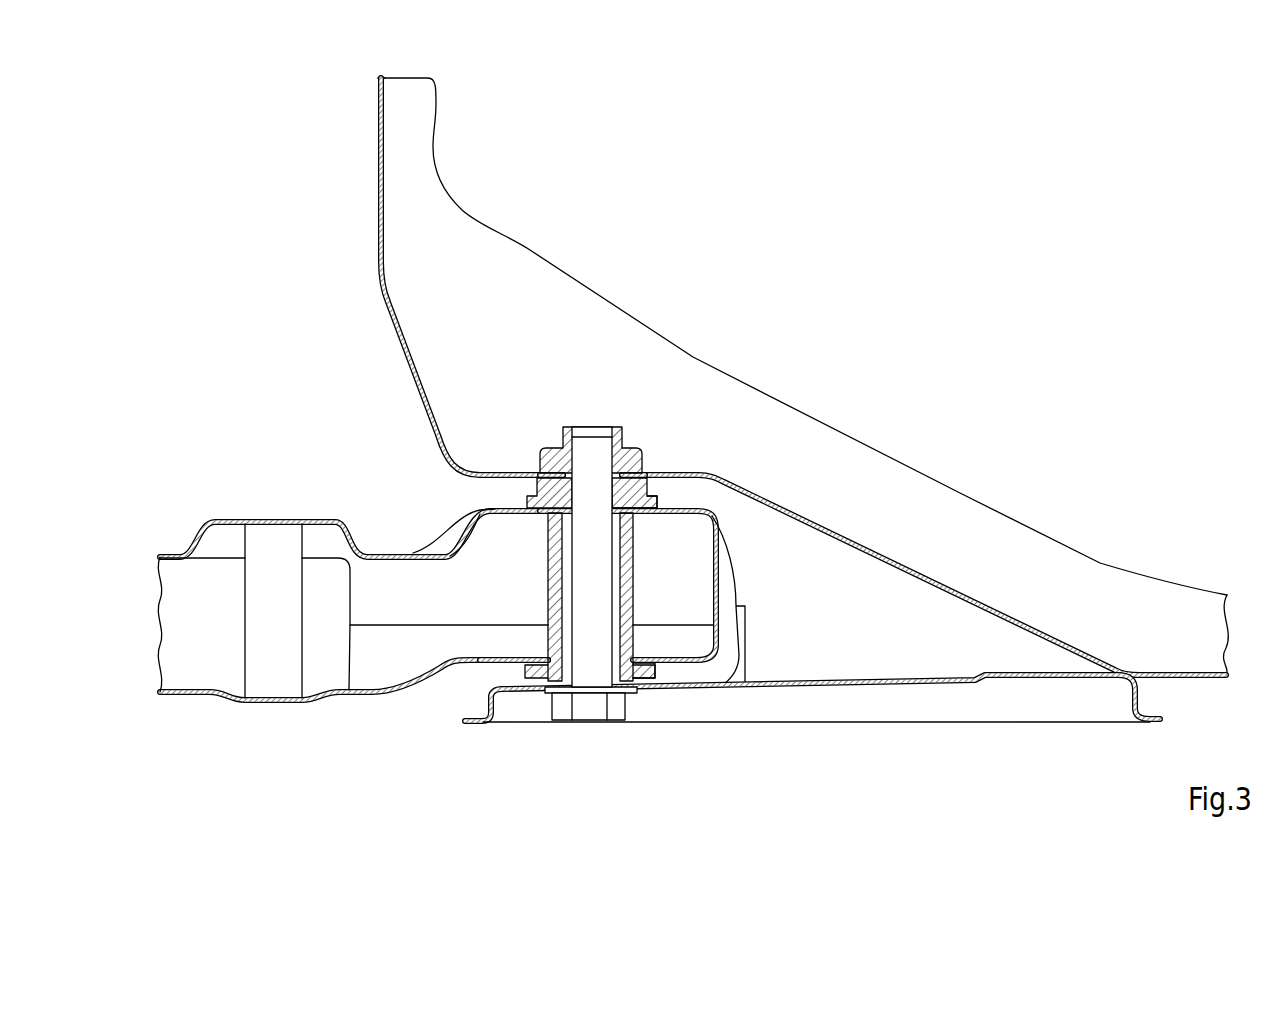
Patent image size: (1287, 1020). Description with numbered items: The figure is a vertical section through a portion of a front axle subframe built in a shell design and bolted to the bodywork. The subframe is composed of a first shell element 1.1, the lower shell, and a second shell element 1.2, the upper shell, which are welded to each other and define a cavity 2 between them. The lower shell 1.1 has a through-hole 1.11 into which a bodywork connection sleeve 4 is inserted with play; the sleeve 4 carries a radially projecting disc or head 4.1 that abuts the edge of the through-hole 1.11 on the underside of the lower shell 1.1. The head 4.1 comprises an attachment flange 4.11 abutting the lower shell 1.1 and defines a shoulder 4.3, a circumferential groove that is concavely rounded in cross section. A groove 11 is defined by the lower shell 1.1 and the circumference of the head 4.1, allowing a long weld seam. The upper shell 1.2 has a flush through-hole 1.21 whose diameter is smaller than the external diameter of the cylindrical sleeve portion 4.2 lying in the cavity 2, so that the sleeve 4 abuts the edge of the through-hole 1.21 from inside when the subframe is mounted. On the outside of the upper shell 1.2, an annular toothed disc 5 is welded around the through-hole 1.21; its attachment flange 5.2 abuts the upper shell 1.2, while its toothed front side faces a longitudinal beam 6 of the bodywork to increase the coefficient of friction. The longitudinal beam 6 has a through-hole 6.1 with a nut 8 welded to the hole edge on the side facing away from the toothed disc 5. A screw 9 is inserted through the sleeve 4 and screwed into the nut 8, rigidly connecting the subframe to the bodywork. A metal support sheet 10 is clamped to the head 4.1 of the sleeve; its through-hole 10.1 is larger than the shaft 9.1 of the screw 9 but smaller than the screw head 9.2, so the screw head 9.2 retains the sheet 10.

The first shell element 1.1 is at (365, 702).
The second shell element 1.2 is at (385, 552).
The through-hole 1.11 is at (547, 655).
The through-hole 1.21 is at (552, 522).
The cavity 2 is at (437, 615).
The bodywork connection sleeve 4 is at (538, 585).
The disc 4.1 is at (630, 673).
The attachment flange 4.11 is at (523, 668).
The sleeve portion 4.2 is at (628, 570).
The shoulder 4.3 is at (653, 690).
The annular toothed disc 5 is at (637, 494).
The attachment flange 5.2 is at (658, 504).
The longitudinal beam 6 is at (796, 512).
The through-hole 6.1 is at (623, 462).
The nut 8 is at (552, 449).
The screw 9 is at (541, 606).
The shaft 9.1 is at (582, 638).
The screw head 9.2 is at (594, 708).
The metal support sheet 10 is at (858, 682).
The through-hole 10.1 is at (630, 697).
The groove 11 is at (672, 672).